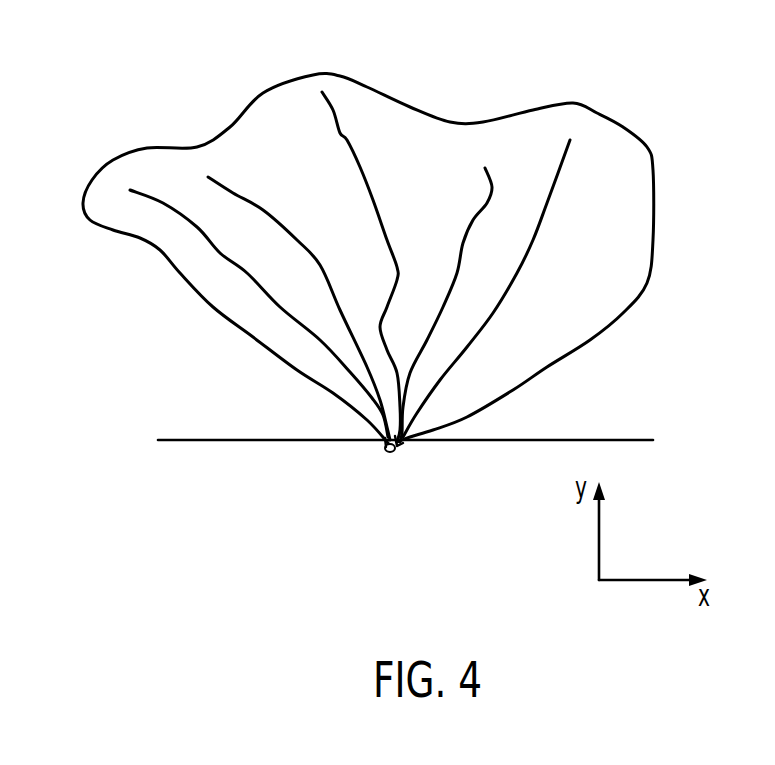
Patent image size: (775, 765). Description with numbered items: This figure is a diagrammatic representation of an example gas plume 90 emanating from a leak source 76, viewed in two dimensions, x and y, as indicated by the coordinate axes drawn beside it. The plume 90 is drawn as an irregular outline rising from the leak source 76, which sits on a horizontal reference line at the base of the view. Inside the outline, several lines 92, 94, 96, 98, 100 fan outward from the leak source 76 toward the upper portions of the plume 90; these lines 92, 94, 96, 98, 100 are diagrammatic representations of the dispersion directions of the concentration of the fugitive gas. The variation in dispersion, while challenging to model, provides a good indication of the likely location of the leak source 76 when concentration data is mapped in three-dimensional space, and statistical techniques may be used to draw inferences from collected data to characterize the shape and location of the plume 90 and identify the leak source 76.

The leak source 76 is at (398, 445).
The plume 90 is at (647, 283).
The line 92 is at (223, 252).
The line 94 is at (222, 187).
The line 96 is at (363, 167).
The line 98 is at (488, 178).
The line 100 is at (557, 197).